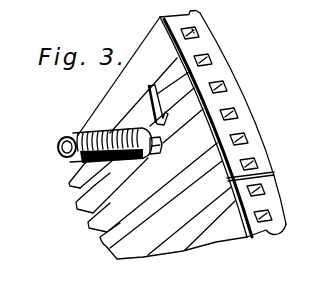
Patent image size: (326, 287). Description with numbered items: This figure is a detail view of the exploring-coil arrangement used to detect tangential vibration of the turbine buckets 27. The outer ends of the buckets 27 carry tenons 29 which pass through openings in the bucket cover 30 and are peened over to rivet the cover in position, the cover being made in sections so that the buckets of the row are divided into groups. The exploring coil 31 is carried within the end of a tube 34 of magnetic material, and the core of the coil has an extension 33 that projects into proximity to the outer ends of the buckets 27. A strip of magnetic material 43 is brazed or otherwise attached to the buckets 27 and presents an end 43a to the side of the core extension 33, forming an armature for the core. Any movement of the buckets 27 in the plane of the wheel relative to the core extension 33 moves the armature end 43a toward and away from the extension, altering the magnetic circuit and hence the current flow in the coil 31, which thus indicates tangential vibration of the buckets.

The buckets 27 is at (109, 246).
The tenons 29 is at (204, 56).
The bucket cover 30 is at (223, 77).
The exploring coil 31 is at (70, 184).
The core extension 33 is at (153, 155).
The tube 34 is at (60, 156).
The strip of magnetic material 43 is at (149, 98).
The end of magnetic strip 43a is at (150, 130).